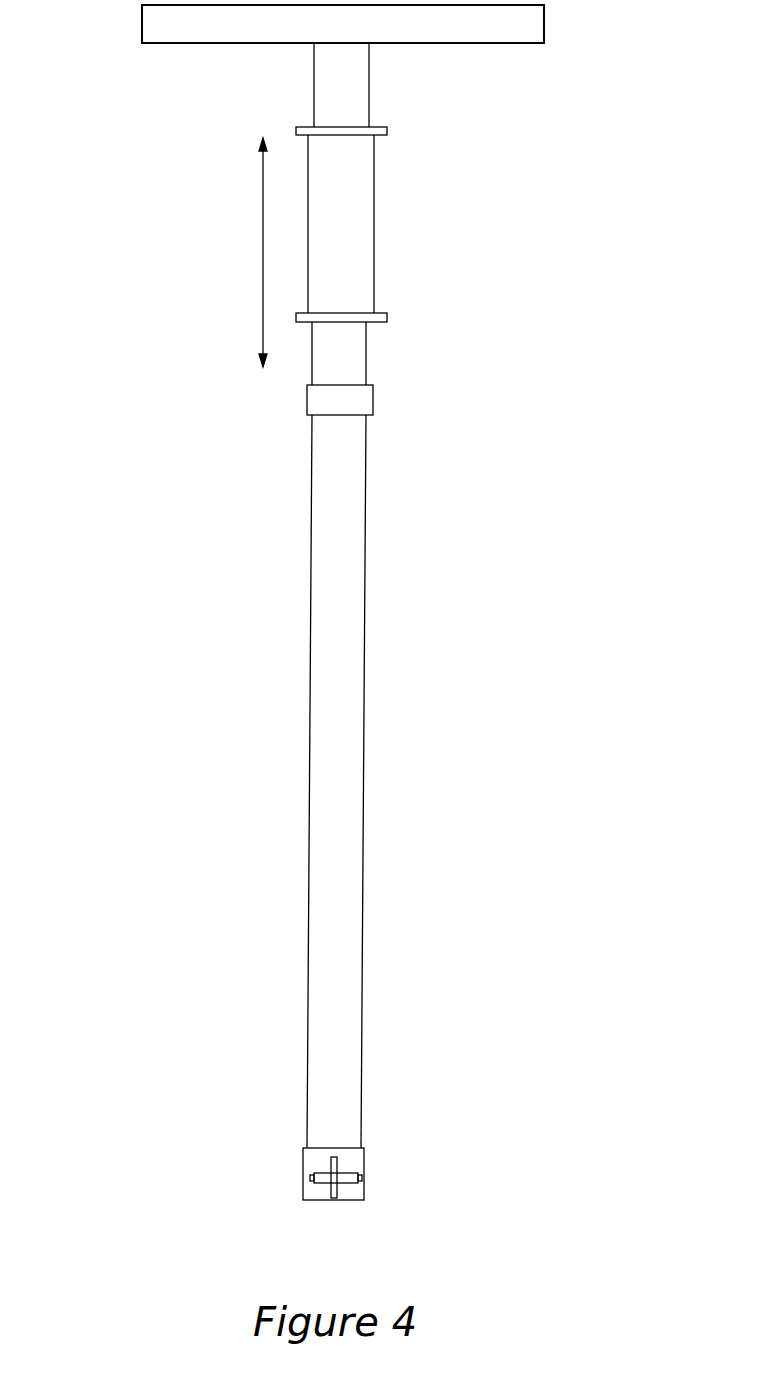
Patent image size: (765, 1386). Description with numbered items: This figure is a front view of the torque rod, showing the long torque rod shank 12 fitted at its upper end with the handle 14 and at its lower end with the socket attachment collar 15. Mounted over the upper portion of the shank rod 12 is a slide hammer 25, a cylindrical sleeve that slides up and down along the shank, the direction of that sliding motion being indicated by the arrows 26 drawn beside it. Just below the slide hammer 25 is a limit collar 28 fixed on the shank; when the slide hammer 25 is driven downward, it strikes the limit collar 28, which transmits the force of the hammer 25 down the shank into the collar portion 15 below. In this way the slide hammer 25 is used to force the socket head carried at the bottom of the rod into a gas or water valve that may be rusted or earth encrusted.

The handle 14 is at (482, 37).
The slide hammer 25 is at (363, 228).
The arrows 26 is at (262, 247).
The limit collar 28 is at (357, 402).
The torque rod shank 12 is at (350, 658).
The socket attachment collar 15 is at (353, 1160).